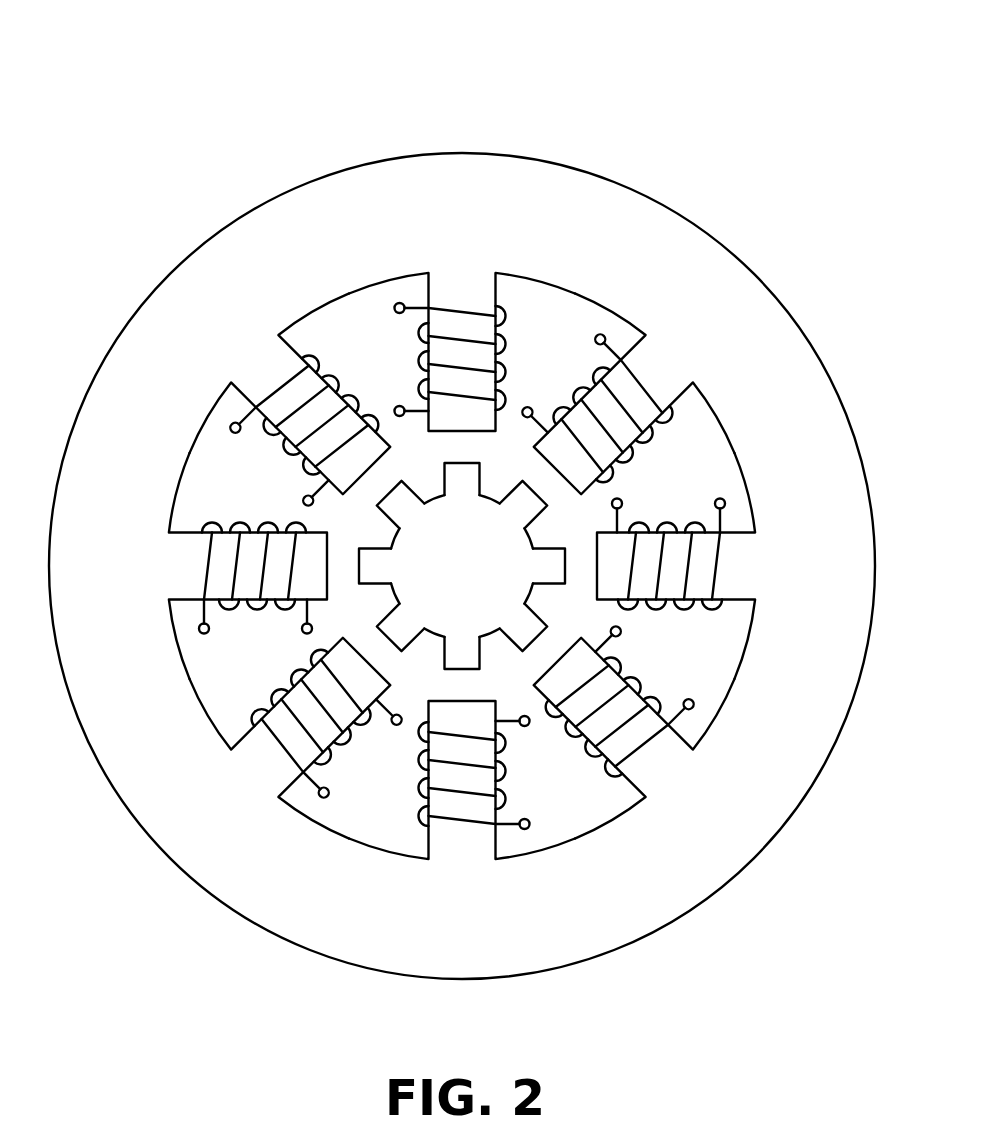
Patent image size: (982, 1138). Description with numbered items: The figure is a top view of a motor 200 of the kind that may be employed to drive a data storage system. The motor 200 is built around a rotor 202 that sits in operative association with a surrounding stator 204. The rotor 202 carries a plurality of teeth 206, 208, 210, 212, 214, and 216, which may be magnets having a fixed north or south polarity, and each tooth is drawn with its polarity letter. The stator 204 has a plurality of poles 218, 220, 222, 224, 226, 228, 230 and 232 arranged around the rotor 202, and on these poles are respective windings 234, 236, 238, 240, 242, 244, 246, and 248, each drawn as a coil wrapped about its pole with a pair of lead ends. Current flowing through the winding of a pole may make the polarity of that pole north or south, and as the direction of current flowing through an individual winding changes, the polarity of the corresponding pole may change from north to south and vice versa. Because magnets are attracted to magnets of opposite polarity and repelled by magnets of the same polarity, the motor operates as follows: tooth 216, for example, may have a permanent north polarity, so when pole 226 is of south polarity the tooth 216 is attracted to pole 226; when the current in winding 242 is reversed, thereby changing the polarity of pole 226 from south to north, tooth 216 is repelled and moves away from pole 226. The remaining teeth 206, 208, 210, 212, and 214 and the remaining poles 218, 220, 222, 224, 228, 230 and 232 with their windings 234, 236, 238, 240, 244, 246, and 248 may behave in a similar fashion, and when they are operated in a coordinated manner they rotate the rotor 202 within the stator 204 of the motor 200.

The motor 200 is at (778, 102).
The rotor 202 is at (442, 579).
The stator 204 is at (285, 920).
The tooth 206 is at (522, 622).
The tooth 208 is at (443, 657).
The tooth 210 is at (372, 595).
The tooth 212 is at (402, 512).
The tooth 214 is at (482, 483).
The tooth 216 is at (553, 537).
The pole 218 is at (257, 752).
The pole 220 is at (188, 559).
The pole 222 is at (275, 362).
The pole 224 is at (475, 290).
The pole 226 is at (672, 382).
The pole 228 is at (743, 578).
The pole 230 is at (653, 772).
The pole 232 is at (447, 848).
The winding 234 is at (287, 760).
The winding 236 is at (205, 582).
The winding 238 is at (273, 393).
The winding 240 is at (452, 308).
The winding 242 is at (648, 377).
The winding 244 is at (723, 560).
The winding 246 is at (658, 738).
The winding 248 is at (472, 826).